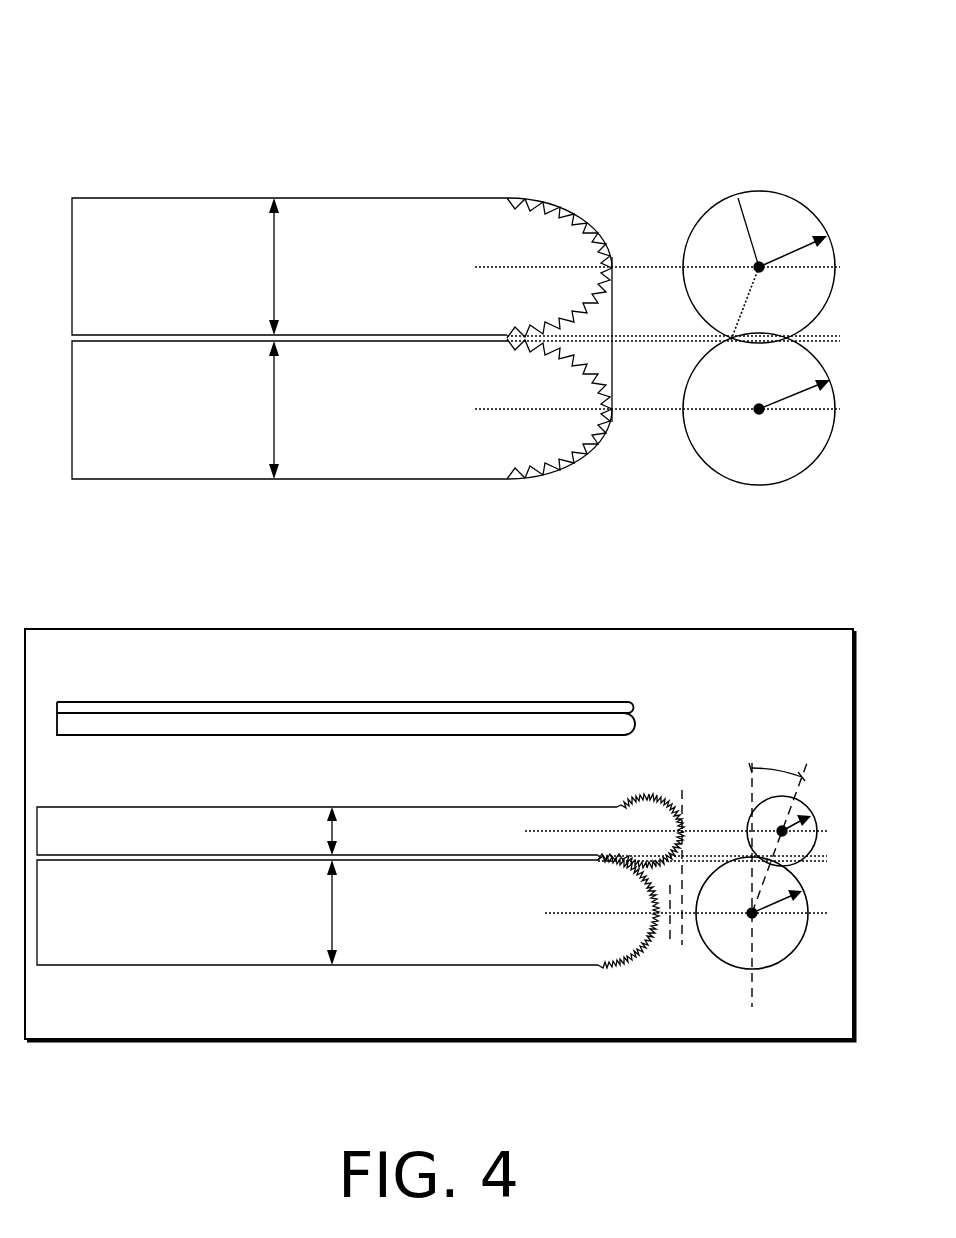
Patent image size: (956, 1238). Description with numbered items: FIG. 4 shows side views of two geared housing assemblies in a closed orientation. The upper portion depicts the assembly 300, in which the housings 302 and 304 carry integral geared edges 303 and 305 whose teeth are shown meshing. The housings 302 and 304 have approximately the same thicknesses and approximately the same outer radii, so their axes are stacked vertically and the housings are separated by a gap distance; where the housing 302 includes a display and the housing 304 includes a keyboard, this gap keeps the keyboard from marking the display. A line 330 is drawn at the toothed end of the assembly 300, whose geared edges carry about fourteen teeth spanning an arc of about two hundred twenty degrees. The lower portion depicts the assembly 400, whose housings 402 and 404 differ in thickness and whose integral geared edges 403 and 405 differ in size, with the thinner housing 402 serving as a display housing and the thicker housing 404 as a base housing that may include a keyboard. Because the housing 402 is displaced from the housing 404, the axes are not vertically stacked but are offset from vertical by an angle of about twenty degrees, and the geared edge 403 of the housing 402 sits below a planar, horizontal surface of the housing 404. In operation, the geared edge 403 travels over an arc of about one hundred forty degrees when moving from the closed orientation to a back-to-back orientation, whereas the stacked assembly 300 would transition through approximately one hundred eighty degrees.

The assembly 300 is at (156, 150).
The housing 302 is at (358, 212).
The integral geared edge 303 is at (565, 218).
The housing 304 is at (432, 468).
The integral geared edge 305 is at (565, 466).
The electrode envelope boundary line 330 is at (597, 456).
The assembly 400 is at (134, 669).
The housing 402 is at (500, 828).
The integral geared edge 403 is at (655, 799).
The housing 404 is at (553, 930).
The integral geared edge 405 is at (651, 945).